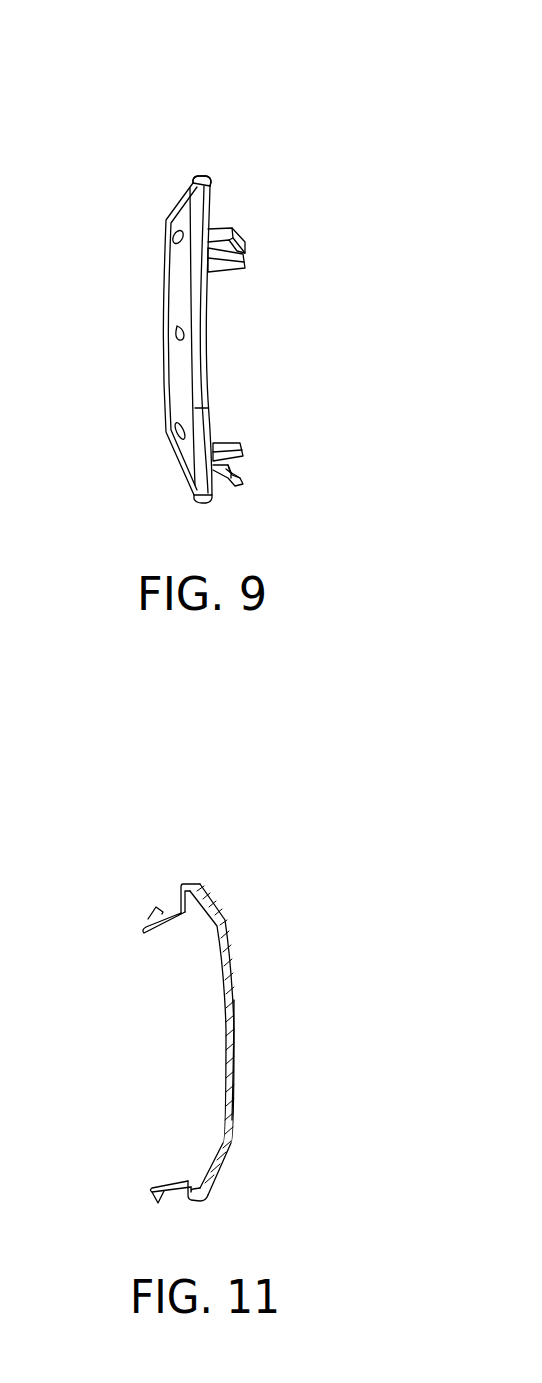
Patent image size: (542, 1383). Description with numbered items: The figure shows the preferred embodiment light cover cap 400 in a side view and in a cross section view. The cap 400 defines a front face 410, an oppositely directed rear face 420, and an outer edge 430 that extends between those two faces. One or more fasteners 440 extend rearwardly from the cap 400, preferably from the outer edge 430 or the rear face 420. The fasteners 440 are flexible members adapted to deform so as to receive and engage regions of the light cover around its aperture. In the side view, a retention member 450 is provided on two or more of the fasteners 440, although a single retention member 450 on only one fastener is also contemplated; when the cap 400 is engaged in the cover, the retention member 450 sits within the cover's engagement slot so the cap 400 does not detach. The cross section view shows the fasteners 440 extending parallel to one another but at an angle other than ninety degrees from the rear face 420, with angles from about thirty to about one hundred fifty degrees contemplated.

In FIG. 9, the light cover cap 400 is at (292, 113).
In FIG. 11, the light cover cap 400 is at (270, 873).
In FIG. 9, the front face 410 is at (160, 312).
In FIG. 11, the front face 410 is at (228, 948).
In FIG. 11, the rear face 420 is at (222, 1012).
In FIG. 9, the outer edge 430 is at (203, 177).
In FIG. 11, the outer edge 430 is at (188, 882).
In FIG. 9, the fasteners 440 is at (229, 272).
In FIG. 11, the fasteners 440 is at (147, 922).
In FIG. 9, the retention member 450 is at (226, 238).